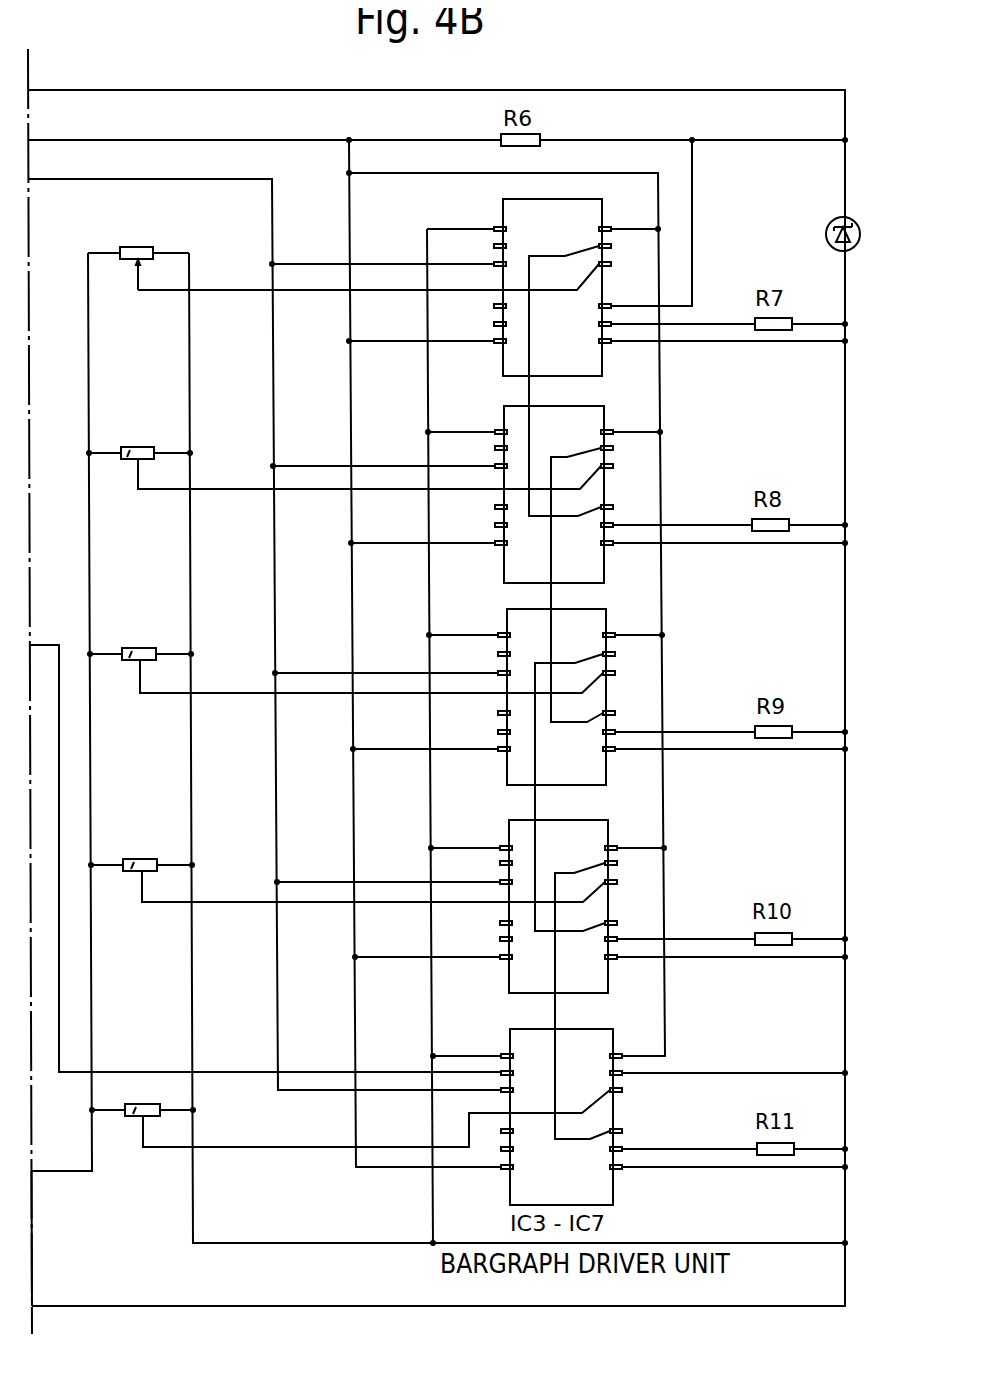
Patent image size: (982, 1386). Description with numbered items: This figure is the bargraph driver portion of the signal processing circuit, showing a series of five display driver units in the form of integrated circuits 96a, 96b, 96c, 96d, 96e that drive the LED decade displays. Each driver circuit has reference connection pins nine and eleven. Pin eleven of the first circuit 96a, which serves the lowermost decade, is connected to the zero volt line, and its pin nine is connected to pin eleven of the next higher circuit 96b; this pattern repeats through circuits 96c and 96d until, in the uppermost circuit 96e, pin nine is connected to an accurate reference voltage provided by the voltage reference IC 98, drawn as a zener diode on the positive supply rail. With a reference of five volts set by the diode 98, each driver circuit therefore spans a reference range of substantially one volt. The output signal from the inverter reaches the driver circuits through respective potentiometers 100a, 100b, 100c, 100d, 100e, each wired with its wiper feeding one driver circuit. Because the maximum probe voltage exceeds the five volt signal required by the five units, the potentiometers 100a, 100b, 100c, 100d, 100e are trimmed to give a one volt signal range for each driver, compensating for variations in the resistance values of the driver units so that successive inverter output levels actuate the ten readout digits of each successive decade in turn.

The voltage reference IC 98 is at (860, 222).
The potentiometer 100a is at (135, 1116).
The potentiometer 100b is at (133, 871).
The potentiometer 100c is at (132, 661).
The potentiometer 100d is at (130, 460).
The potentiometer 100e is at (147, 250).
The display driver circuit 96a is at (520, 1187).
The display driver circuit 96b is at (517, 981).
The display driver circuit 96c is at (513, 773).
The display driver circuit 96d is at (512, 568).
The display driver circuit 96e is at (507, 363).